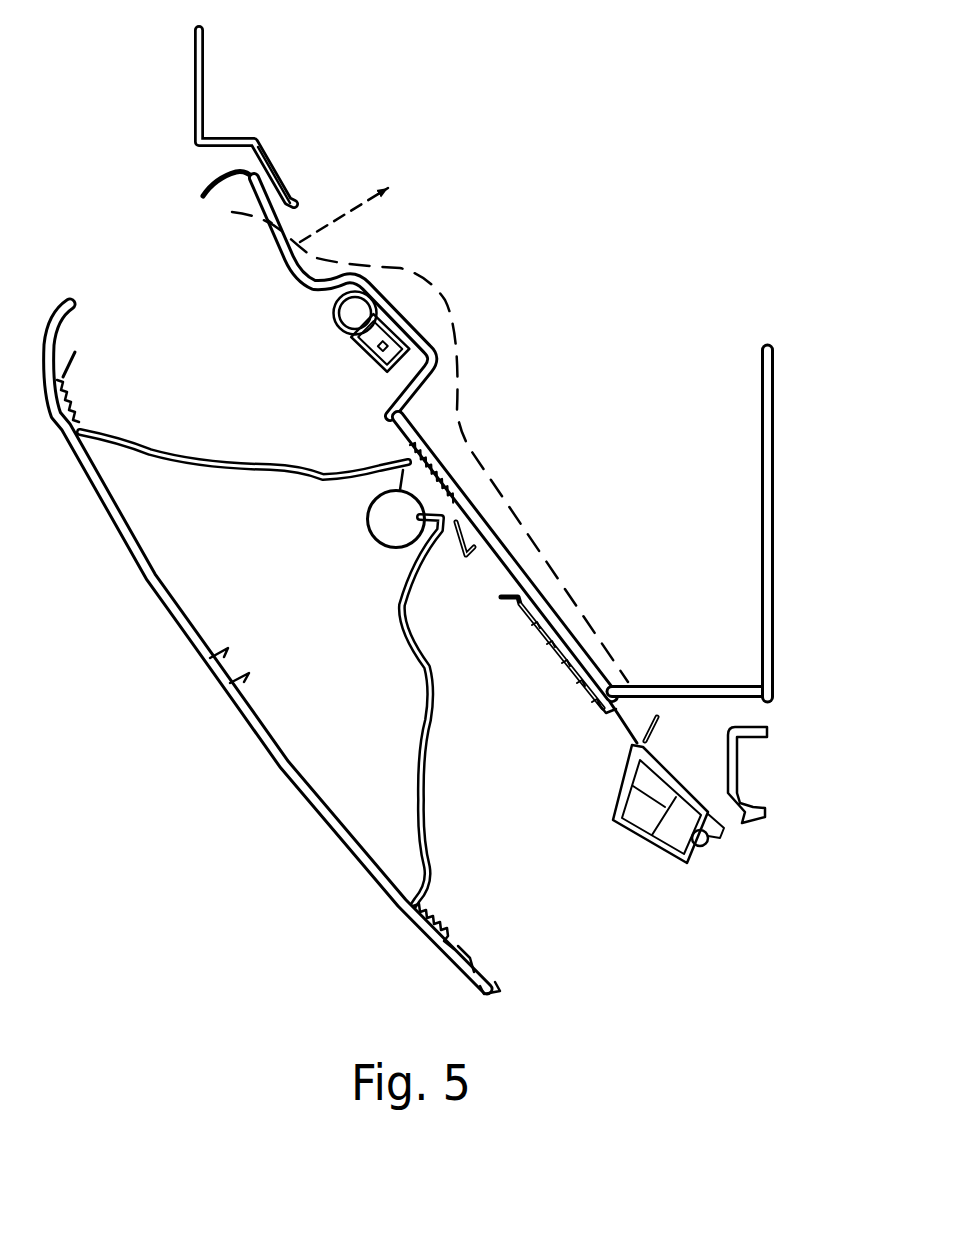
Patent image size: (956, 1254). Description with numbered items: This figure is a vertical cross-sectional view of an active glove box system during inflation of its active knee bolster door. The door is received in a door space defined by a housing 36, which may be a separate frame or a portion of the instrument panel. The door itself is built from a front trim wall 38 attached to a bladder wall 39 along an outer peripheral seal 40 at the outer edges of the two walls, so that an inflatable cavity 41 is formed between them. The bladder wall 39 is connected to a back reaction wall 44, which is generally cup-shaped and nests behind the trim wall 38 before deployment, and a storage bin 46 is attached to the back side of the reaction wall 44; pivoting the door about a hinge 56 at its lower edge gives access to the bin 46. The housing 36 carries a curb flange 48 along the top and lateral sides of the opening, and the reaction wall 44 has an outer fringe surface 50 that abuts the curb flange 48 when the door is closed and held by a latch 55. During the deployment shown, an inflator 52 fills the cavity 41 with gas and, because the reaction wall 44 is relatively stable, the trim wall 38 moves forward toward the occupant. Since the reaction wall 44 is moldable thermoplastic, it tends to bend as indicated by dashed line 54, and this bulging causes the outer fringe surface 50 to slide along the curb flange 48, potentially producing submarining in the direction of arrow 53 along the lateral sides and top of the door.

The housing 36 is at (190, 65).
The front trim wall 38 is at (130, 563).
The bladder wall 39 is at (212, 460).
The outer peripheral seal 40 is at (72, 410).
The inflatable cavity 41 is at (297, 700).
The back reaction wall 44 is at (580, 690).
The storage bin 46 is at (754, 404).
The curb flange 48 is at (254, 164).
The outer fringe surface 50 is at (258, 182).
The inflator 52 is at (366, 514).
The arrow 53 is at (341, 211).
The dashed line 54 is at (448, 286).
The latch 55 is at (352, 346).
The hinge 56 is at (670, 867).